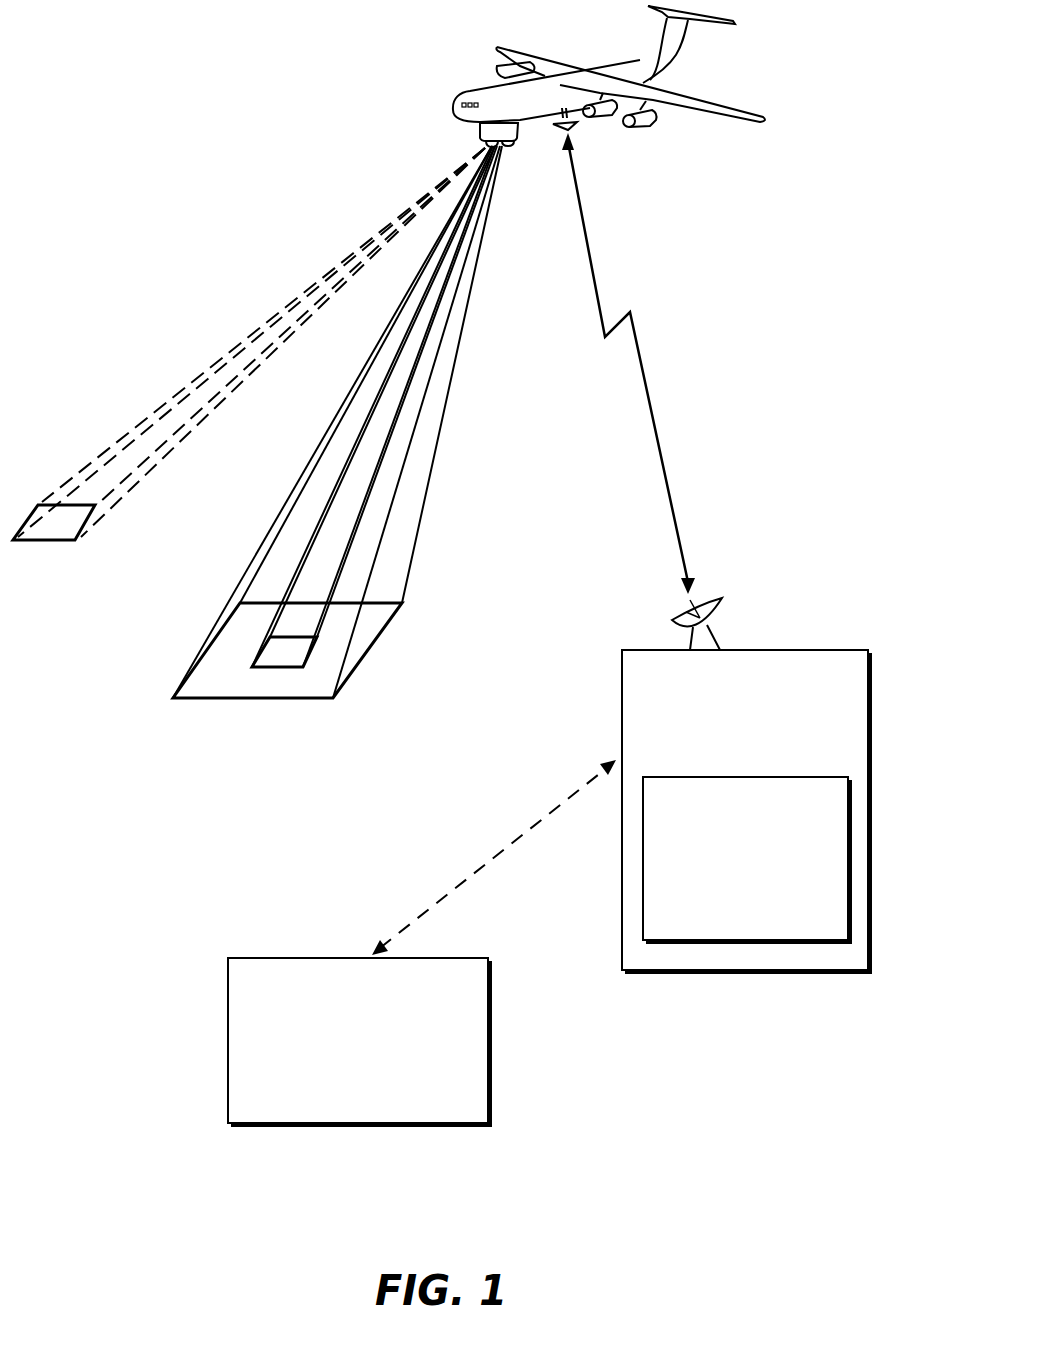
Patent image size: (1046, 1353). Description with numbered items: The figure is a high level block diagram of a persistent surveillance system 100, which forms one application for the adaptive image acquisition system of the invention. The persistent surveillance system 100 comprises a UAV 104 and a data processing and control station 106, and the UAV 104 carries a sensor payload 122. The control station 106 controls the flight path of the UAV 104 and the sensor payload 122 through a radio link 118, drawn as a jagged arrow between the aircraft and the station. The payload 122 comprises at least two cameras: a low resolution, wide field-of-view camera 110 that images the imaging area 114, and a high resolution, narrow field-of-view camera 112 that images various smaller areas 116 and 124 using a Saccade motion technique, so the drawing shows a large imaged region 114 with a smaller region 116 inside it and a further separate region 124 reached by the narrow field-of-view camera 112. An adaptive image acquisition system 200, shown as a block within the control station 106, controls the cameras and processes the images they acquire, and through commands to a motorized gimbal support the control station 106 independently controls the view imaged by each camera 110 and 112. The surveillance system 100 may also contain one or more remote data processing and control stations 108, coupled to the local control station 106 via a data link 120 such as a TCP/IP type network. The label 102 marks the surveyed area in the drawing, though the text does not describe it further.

The persistent surveillance system 100 is at (172, 36).
The area of interest 102 is at (486, 656).
The UAV 104 is at (597, 62).
The data processing and control station 106 is at (828, 650).
The remote data processing and control station 108 is at (488, 1075).
The wide field-of-view camera 110 is at (509, 146).
The narrow field-of-view camera 112 is at (483, 148).
The imaging area 114 is at (357, 670).
The imaging area 116 is at (287, 667).
The radio link 118 is at (643, 367).
The data link 120 is at (483, 868).
The sensor payload 122 is at (455, 137).
The imaging area 124 is at (43, 543).
The adaptive image acquisition system 200 is at (796, 934).